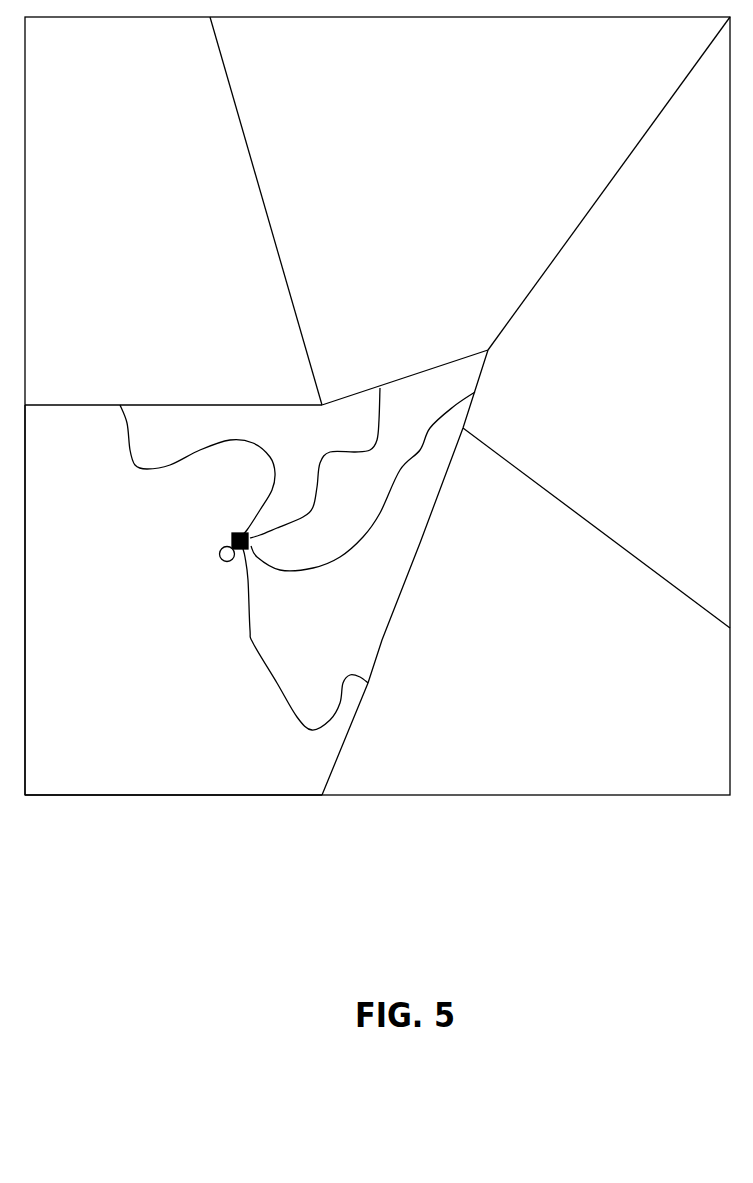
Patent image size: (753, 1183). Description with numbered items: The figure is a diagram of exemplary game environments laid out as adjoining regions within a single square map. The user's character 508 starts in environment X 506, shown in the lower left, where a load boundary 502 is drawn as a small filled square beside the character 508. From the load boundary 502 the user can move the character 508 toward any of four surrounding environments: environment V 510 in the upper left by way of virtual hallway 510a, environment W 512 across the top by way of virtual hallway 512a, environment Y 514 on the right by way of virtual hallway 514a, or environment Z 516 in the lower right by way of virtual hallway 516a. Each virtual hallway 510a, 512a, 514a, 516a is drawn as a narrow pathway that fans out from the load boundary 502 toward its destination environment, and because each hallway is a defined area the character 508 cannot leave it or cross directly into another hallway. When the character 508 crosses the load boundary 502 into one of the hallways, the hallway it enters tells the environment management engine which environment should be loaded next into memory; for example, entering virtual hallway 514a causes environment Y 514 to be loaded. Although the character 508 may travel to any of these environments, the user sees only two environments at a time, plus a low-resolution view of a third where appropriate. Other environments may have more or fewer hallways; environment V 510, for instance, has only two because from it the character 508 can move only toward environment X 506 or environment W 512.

The load boundary 502 is at (236, 532).
The character 508 is at (223, 568).
The environment X 506 is at (97, 732).
The environment V 510 is at (105, 216).
The environment W 512 is at (420, 210).
The environment Y 514 is at (627, 400).
The environment Z 516 is at (575, 712).
The virtual hallway 510a is at (70, 456).
The virtual hallway 512a is at (312, 438).
The virtual hallway 514a is at (332, 584).
The virtual hallway 516a is at (265, 752).